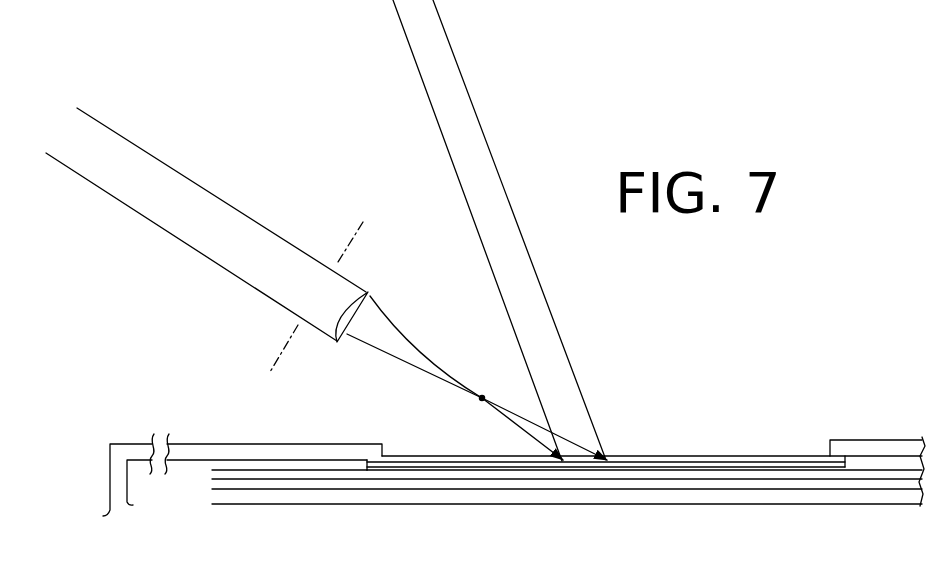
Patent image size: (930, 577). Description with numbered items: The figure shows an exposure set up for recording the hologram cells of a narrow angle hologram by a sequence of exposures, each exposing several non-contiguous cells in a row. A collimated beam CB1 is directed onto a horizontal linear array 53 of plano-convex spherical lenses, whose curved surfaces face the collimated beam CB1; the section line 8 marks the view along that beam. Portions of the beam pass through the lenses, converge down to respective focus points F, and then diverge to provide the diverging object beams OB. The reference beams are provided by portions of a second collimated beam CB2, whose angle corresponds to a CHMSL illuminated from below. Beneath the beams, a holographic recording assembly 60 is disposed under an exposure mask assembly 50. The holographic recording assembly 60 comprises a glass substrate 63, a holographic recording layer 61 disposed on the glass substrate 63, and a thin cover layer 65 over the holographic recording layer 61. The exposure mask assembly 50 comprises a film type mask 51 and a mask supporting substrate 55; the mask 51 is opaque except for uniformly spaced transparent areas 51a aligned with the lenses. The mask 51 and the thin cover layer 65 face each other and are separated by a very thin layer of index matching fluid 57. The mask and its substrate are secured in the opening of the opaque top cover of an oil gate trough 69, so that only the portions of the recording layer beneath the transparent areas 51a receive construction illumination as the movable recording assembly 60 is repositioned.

The collimated beam CB1 is at (143, 153).
The collimated beam CB2 is at (447, 32).
The section line 8- 8 is at (355, 233).
The horizontal linear array of planoconvex spherical lenses 53 is at (367, 291).
The focus point F is at (482, 395).
The object beam OB is at (525, 416).
The oil gate trough 69 is at (222, 410).
The thin cover layer 65 is at (278, 477).
The holographic recording layer 61 is at (342, 483).
The holographic recording assembly 60 is at (212, 468).
The glass substrate 63 is at (328, 497).
The mask supporting substrate 55 is at (689, 457).
The index matching fluid 57 is at (723, 468).
The film type mask 51 is at (772, 464).
The transparent areas 51a is at (598, 467).
The exposure mask assembly 50 is at (852, 458).